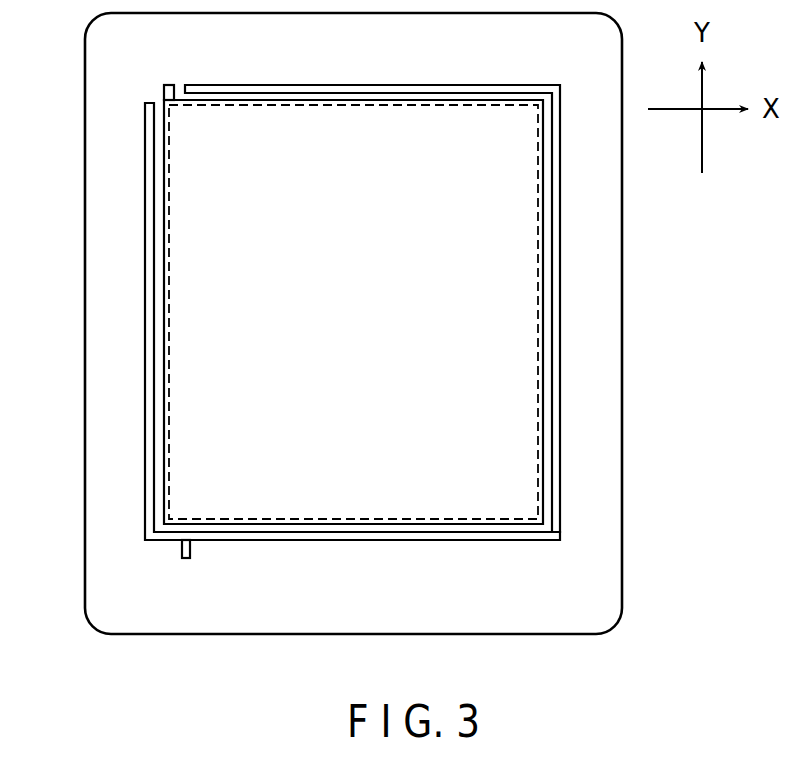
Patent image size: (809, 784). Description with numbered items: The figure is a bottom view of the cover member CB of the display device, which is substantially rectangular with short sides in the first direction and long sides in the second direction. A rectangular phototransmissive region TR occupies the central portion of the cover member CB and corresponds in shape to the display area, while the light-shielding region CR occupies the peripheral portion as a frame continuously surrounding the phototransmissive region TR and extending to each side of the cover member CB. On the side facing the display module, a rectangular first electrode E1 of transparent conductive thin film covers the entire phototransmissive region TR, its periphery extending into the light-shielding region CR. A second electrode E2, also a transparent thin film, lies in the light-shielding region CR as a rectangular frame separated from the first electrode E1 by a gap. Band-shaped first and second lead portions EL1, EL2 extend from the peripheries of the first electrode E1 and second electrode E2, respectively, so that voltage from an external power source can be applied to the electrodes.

The cover member CB is at (642, 582).
The light-shielding region CR is at (545, 554).
The phototransmissive region TR is at (548, 316).
The first electrode E1 is at (150, 335).
The second electrode E2 is at (287, 87).
The first lead portion EL1 is at (168, 85).
The second lead portion EL2 is at (192, 548).